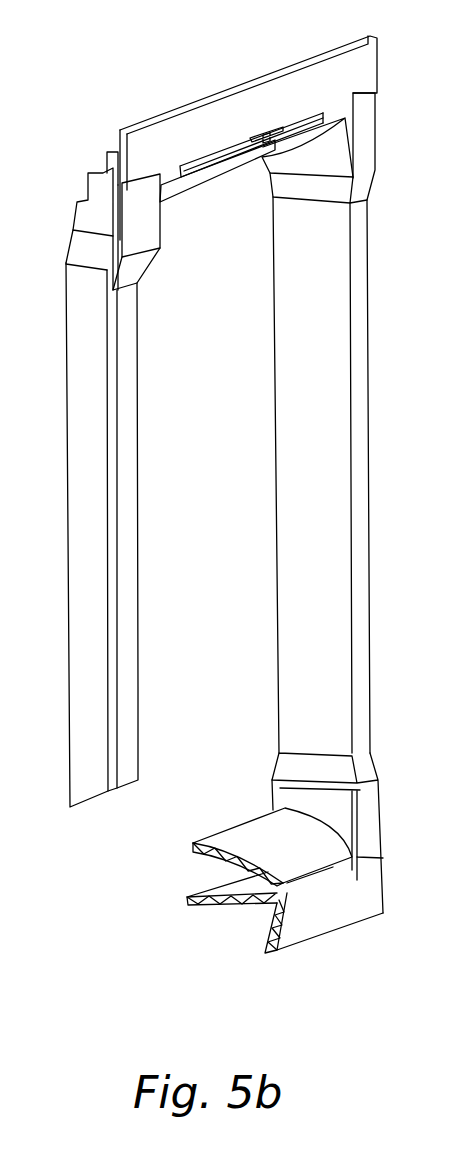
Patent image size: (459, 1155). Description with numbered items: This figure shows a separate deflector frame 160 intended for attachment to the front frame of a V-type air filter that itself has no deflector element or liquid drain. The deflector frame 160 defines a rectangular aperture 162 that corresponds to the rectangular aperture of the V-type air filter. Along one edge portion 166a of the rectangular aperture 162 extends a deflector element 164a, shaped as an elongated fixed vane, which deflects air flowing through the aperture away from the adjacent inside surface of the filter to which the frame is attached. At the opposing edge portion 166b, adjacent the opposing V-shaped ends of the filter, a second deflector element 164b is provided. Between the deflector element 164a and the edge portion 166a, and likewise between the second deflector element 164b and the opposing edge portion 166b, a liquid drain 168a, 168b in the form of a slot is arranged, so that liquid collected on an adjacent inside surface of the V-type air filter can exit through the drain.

The deflector frame 160 is at (124, 84).
The rectangular aperture 162 is at (158, 568).
The deflector element 164a is at (267, 838).
The second deflector element 164b is at (197, 182).
The edge portion 166a is at (235, 892).
The opposing edge portion 166b is at (218, 152).
The liquid drain 168a is at (300, 883).
The liquid drain 168b is at (255, 140).